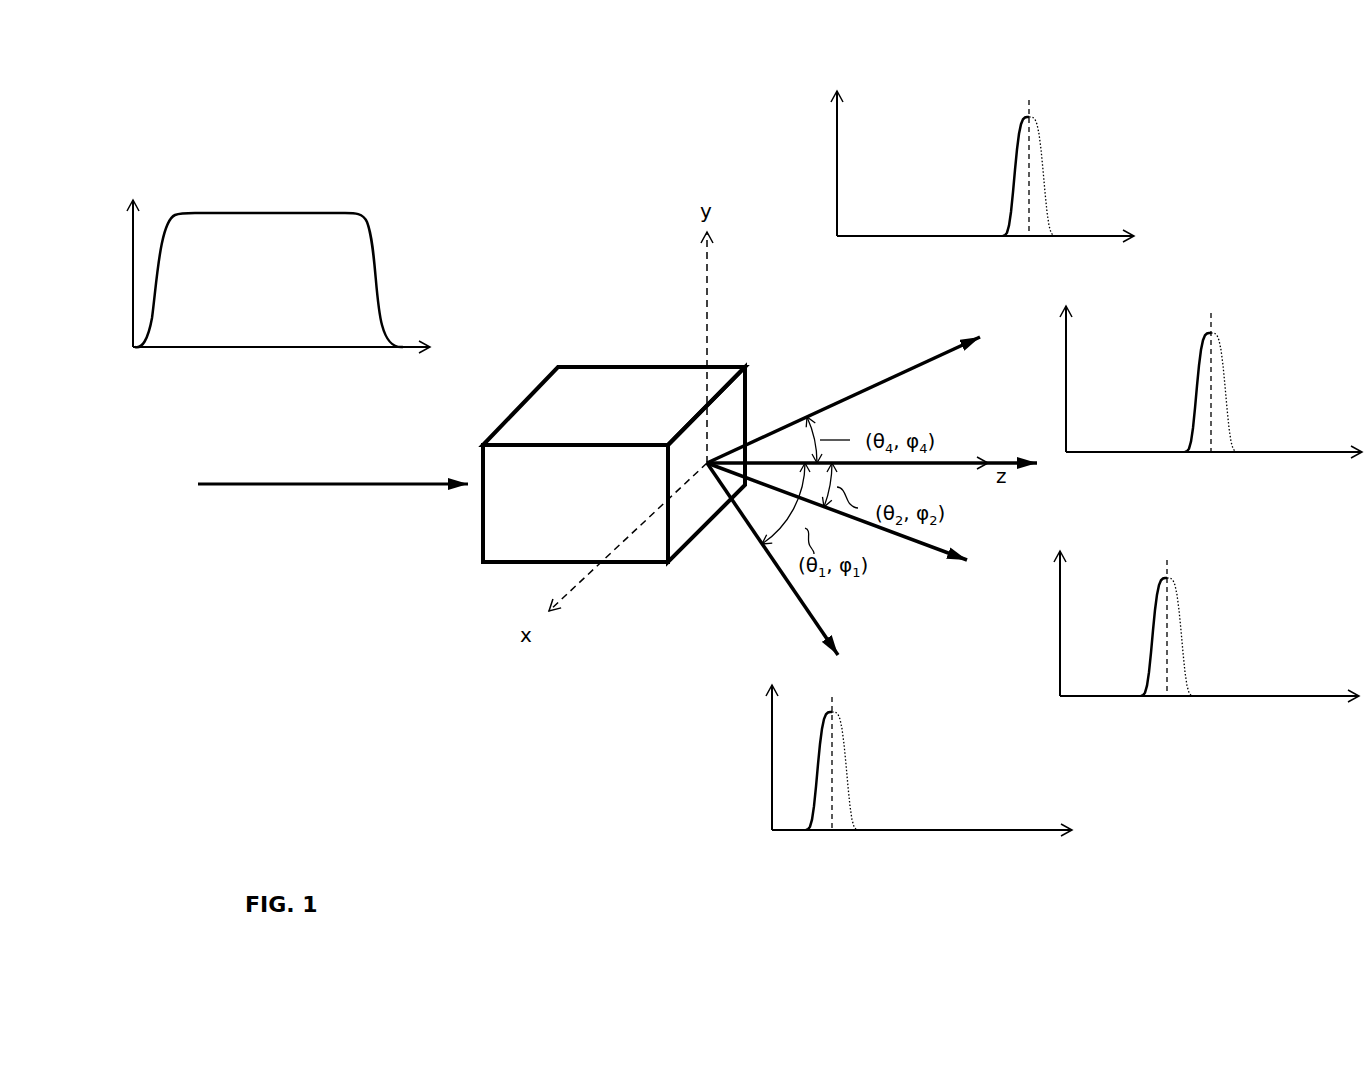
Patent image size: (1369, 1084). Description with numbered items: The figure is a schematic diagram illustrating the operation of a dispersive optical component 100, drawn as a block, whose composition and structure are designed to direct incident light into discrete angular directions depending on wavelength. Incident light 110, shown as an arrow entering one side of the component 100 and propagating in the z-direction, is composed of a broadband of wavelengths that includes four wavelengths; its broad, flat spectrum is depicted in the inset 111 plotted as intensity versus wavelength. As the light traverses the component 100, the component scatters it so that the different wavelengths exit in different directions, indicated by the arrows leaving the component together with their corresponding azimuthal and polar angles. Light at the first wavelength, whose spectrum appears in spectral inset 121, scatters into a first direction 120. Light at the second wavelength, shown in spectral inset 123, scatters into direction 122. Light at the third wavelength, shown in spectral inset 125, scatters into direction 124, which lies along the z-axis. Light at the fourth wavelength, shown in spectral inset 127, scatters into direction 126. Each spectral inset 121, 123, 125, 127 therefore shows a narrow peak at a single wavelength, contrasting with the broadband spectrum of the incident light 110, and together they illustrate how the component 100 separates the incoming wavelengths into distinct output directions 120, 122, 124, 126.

The dispersive optical component 100 is at (575, 562).
The incident light 110 is at (323, 487).
The input broadband spectrum 111 is at (385, 253).
The first direction 120 is at (783, 575).
The spectral inset 121 is at (862, 770).
The first direction 122 is at (943, 553).
The spectral inset 123 is at (1198, 637).
The first direction 124 is at (1017, 470).
The spectral inset 125 is at (1242, 392).
The first direction 126 is at (913, 372).
The spectral inset 127 is at (1003, 172).